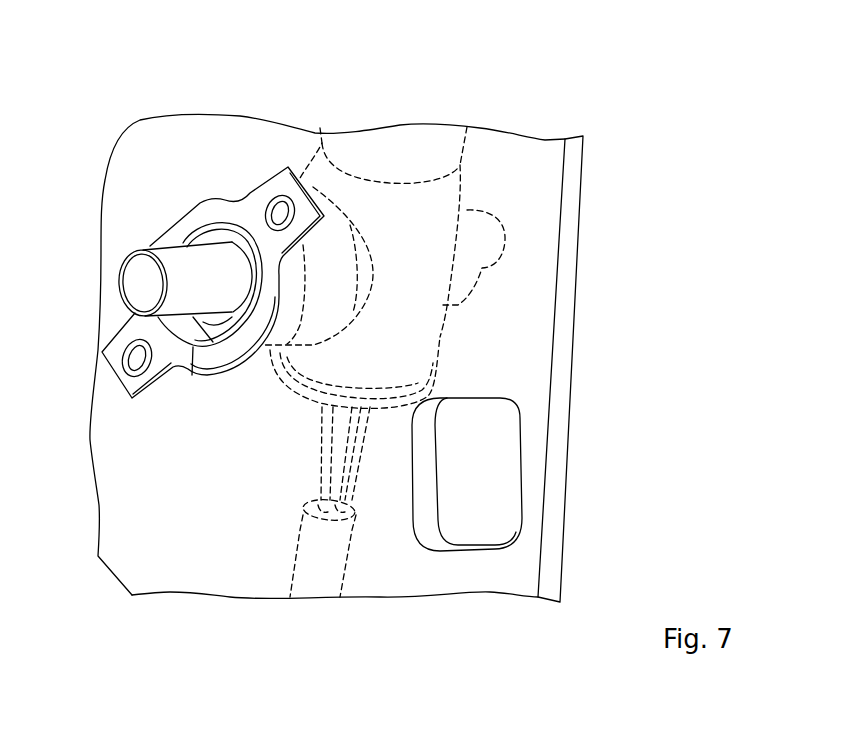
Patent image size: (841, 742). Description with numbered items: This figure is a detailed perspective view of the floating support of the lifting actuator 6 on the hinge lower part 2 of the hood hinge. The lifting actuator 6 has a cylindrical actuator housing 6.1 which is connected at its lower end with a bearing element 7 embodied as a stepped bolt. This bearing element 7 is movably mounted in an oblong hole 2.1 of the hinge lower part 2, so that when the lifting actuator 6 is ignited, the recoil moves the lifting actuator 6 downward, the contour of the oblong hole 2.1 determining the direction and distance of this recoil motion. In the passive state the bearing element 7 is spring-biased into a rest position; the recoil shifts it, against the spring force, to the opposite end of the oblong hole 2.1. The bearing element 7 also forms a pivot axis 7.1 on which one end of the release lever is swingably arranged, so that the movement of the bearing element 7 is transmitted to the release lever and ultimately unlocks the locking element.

The hinge lower part 2 is at (201, 505).
The oblong hole 2.1 is at (200, 378).
The lifting actuator 6 is at (439, 336).
The actuator housing 6.1 is at (399, 148).
The bearing element 7 is at (313, 343).
The pivot axis 7.1 is at (137, 283).